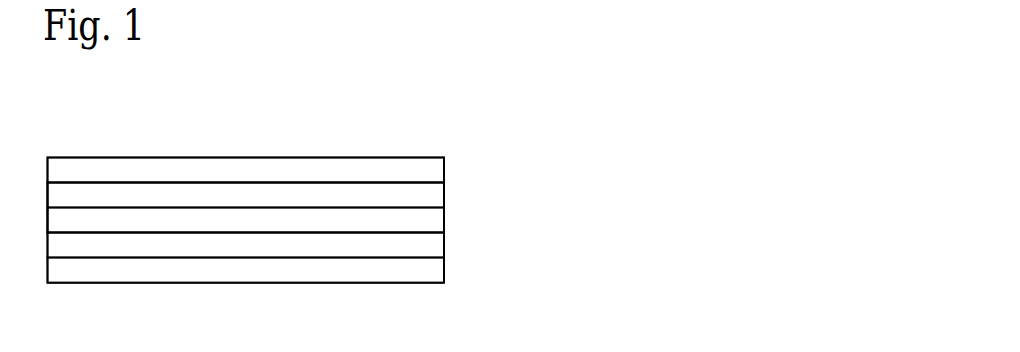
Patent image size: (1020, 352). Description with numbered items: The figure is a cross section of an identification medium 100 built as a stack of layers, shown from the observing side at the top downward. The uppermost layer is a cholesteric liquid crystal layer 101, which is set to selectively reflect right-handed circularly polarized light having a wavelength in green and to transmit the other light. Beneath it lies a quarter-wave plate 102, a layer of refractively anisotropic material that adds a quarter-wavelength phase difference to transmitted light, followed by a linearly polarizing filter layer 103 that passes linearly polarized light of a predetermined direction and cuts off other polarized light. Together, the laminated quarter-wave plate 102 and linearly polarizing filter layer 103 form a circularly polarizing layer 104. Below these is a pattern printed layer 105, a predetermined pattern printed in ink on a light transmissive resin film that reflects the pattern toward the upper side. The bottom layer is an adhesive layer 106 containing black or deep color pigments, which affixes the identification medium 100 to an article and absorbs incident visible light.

The identification medium 100 is at (286, 143).
The cholesteric liquid crystal layer 101 is at (435, 173).
The λ/4 plate 102 is at (435, 193).
The linearly polarizing filter layer 103 is at (435, 222).
The circularly polarizing layer 104 is at (695, 235).
The pattern printed layer 105 is at (440, 247).
The adhesive layer 106 is at (430, 272).